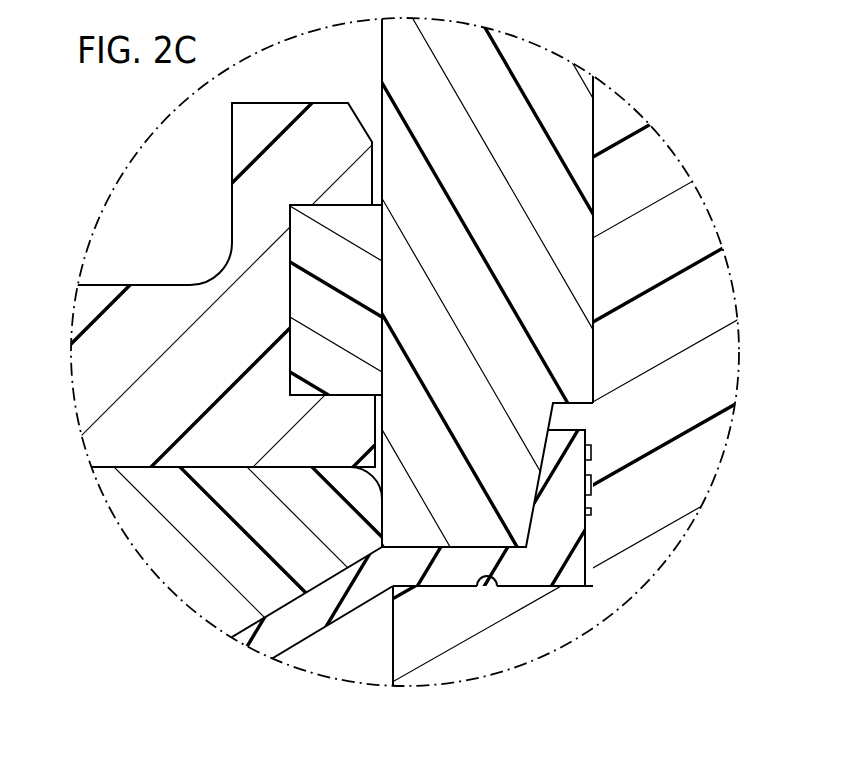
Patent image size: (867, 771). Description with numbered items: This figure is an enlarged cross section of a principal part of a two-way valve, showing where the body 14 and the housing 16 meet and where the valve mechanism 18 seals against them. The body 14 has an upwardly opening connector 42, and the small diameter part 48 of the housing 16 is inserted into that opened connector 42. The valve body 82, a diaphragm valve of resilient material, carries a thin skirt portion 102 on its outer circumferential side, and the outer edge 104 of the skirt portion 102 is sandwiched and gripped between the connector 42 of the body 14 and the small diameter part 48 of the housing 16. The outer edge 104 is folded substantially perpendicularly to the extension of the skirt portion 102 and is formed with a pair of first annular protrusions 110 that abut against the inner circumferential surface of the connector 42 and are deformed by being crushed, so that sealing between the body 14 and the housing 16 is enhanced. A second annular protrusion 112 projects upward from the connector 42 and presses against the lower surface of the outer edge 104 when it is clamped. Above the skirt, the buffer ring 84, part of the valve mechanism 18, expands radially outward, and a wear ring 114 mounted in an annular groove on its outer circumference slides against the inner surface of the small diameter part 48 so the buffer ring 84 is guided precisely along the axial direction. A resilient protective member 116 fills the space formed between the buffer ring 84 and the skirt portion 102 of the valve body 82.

The body 14 is at (651, 174).
The housing 16 is at (543, 40).
The valve mechanism 18 is at (85, 457).
The connector 42 is at (712, 291).
The small diameter part 48 is at (398, 62).
The valve body 82 is at (405, 570).
The buffer ring 84 is at (148, 299).
The skirt portion 102 is at (287, 612).
The outer edge 104 is at (633, 521).
The first annular protrusions 110 is at (597, 460).
The second annular protrusion 112 is at (487, 576).
The wear ring 114 is at (312, 300).
The protective member 116 is at (165, 551).